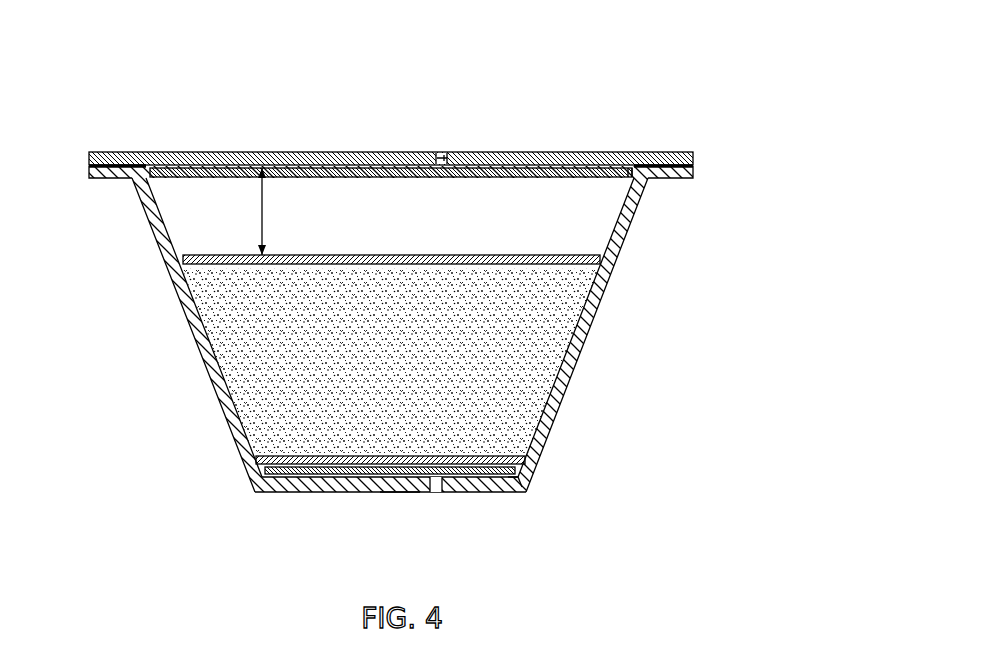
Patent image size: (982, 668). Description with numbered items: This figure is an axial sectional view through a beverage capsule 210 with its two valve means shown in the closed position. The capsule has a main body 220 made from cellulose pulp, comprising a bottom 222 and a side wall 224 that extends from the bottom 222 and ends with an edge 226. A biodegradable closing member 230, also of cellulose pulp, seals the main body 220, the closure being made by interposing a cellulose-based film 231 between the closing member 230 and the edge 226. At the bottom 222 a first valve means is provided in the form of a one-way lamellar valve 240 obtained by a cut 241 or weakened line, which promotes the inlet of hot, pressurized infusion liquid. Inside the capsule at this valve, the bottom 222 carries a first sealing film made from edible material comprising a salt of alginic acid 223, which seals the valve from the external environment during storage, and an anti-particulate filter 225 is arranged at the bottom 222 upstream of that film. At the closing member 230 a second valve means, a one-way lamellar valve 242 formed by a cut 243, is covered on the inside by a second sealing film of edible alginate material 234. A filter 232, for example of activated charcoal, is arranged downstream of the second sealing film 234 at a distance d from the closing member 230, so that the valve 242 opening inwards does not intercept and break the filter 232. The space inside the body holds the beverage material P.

The capsule 210 is at (401, 306).
The main body 220 is at (400, 358).
The bottom 222 is at (363, 492).
The first sealing film made from edible material comprising at least one salt of alg 223 is at (308, 470).
The side wall 224 is at (155, 233).
The anti-particulate filter 225 is at (516, 482).
The edge 226 is at (117, 176).
The closing member 230 is at (391, 122).
The cellulose-based film 231 is at (117, 166).
The filter 232 is at (212, 265).
The second sealing film made from edible material comprising at least one salt of al 234 is at (600, 175).
The one-way lamellar valve 240 is at (397, 482).
The cut 241 is at (435, 488).
The one-way lamellar valve 242 is at (387, 158).
The cut 243 is at (447, 157).
The beverage material P is at (313, 288).
The distance d is at (269, 211).